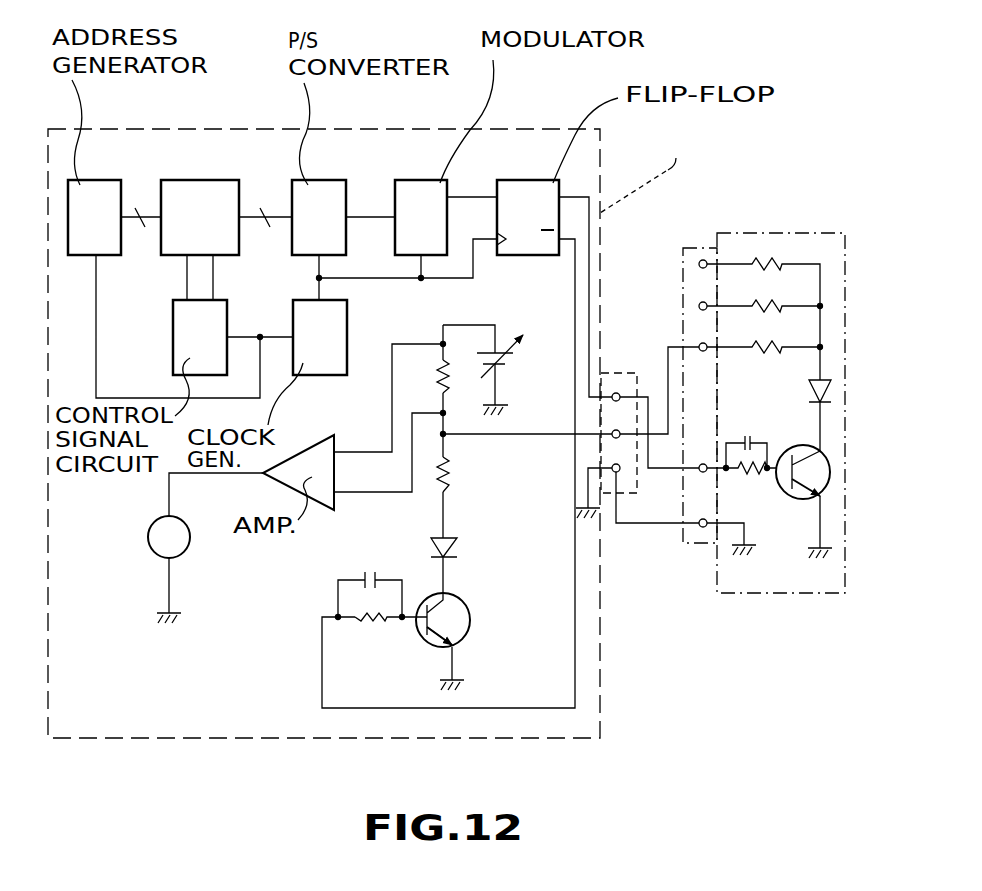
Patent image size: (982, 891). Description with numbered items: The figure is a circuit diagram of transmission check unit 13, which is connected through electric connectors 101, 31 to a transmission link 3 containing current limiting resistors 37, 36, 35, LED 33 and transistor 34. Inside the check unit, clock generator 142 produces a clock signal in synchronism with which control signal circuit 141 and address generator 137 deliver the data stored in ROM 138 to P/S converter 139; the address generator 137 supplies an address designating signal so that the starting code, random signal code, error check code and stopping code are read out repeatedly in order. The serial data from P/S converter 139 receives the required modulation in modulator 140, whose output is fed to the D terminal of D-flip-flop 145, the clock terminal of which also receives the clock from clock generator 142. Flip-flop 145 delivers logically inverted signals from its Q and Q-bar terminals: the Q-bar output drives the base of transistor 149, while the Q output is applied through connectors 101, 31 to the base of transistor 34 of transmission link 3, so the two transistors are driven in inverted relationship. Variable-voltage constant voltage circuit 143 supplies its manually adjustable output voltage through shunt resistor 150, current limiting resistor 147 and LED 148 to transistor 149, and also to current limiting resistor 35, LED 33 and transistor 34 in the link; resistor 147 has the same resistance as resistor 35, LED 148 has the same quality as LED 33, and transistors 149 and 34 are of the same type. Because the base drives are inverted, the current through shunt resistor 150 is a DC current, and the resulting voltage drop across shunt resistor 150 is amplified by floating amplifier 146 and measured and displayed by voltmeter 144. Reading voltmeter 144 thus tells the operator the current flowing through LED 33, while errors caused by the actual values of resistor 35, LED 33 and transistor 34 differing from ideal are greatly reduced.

The address generator 137 is at (107, 185).
The ROM 138 is at (219, 185).
The parallel/serial converter 139 is at (327, 185).
The modulator 140 is at (424, 185).
The D-flip-flop 145 is at (535, 185).
The control signal circuit 141 is at (223, 314).
The clock generator 142 is at (342, 325).
The variable-voltage constant voltage circuit 143 is at (508, 334).
The shunt resistor 150 is at (455, 392).
The current limiting resistor 147 is at (467, 477).
The LED 148 is at (463, 548).
The transistor 149 is at (478, 627).
The voltmeter 144 is at (190, 545).
The floating amplifier 146 is at (304, 450).
The electric connector 101 is at (618, 368).
The transmission check unit 13 is at (600, 178).
The electric connector 31 is at (689, 247).
The current limiting resistor 37 is at (772, 250).
The current limiting resistor 36 is at (782, 295).
The current limiting resistor 35 is at (763, 361).
The LED 33 is at (808, 392).
The transistor 34 is at (790, 504).
The transmission link 3 is at (782, 598).